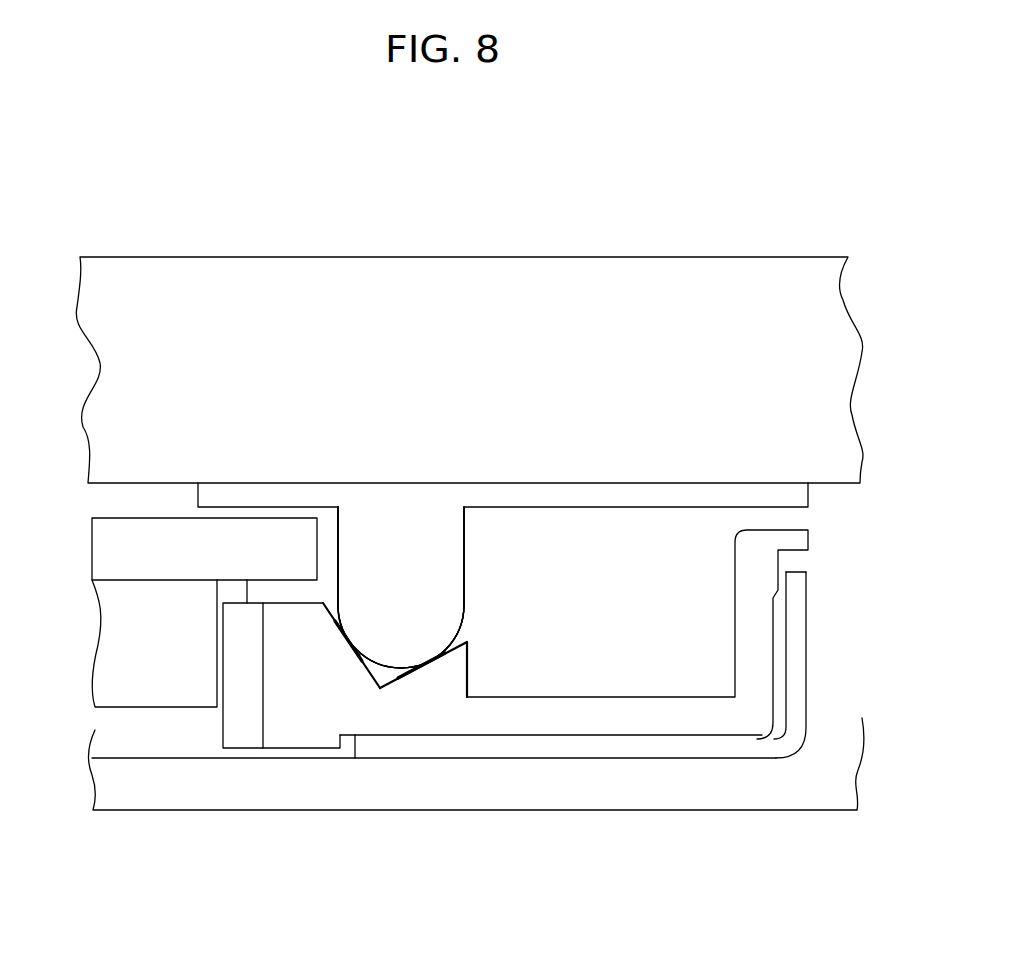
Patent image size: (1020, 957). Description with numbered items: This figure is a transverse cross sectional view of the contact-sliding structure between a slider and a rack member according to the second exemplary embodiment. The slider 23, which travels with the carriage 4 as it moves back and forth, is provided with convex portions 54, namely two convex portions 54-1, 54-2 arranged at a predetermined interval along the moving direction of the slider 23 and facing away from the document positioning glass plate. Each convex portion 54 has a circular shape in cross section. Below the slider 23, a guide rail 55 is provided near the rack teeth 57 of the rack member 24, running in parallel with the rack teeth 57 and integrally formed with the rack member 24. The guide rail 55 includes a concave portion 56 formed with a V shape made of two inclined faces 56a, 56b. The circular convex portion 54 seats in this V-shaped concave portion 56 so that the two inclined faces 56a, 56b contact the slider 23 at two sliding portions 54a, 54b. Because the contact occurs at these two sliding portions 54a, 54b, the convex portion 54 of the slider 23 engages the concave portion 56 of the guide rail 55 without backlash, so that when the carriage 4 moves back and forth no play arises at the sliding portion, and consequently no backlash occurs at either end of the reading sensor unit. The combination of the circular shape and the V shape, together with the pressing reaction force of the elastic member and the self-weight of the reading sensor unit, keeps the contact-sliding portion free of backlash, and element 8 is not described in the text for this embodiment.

The carriage 4 is at (622, 275).
The slider 23 is at (658, 500).
The convex portion 54 is at (398, 573).
The convex portion 54-1 is at (424, 411).
The convex portion 54-2 is at (424, 430).
The sliding portion 54a is at (350, 640).
The sliding portion 54b is at (430, 660).
The substrate 8 is at (145, 667).
The rack teeth 57 is at (240, 737).
The rack member 24 is at (302, 712).
The concave portion 56 is at (416, 752).
The inclined face 56a is at (357, 650).
The inclined face 56b is at (412, 668).
The guide rail 55 is at (452, 682).